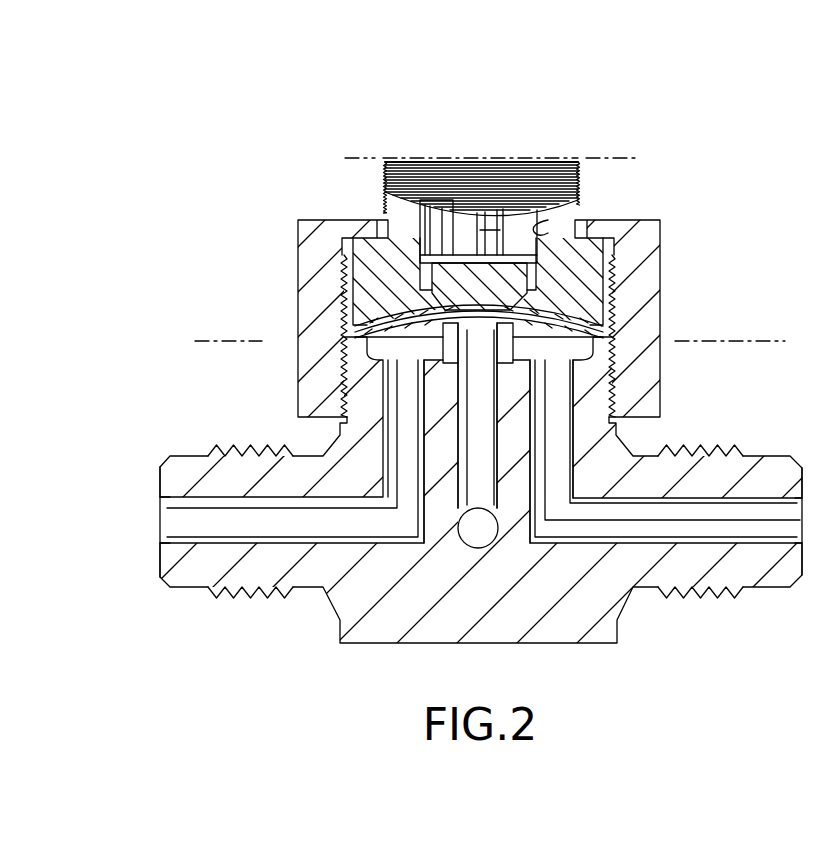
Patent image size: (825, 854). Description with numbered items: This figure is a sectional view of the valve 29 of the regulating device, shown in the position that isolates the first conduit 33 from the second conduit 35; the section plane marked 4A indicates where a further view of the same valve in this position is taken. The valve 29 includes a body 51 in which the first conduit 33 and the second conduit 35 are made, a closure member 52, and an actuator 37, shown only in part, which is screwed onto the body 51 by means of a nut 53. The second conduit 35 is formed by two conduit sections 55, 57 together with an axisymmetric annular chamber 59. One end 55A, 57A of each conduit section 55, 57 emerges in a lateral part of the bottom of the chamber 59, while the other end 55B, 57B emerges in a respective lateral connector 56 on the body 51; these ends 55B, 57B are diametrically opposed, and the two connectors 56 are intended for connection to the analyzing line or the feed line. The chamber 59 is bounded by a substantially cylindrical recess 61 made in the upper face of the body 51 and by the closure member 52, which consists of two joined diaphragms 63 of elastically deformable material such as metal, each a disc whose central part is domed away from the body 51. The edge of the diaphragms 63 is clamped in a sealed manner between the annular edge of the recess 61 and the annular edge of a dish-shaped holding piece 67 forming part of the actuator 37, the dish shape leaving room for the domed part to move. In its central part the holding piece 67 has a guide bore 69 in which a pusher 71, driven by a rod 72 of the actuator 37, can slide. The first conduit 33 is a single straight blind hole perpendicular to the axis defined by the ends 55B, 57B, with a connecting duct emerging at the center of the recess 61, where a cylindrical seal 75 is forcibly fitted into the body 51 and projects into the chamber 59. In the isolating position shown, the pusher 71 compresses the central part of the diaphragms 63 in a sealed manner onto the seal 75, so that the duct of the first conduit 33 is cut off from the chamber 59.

The valve 29 is at (596, 136).
The first conduit 33 is at (482, 532).
The second conduit 35 is at (212, 527).
The actuator 37 is at (520, 158).
The body 51 is at (577, 622).
The closure member 52 is at (540, 309).
The nut 53 is at (320, 238).
The conduit section 55 is at (275, 525).
The end of conduit section 55A is at (408, 377).
The end of conduit section 55B is at (183, 527).
The lateral connector 56 is at (227, 465).
The conduit section 57 is at (632, 525).
The end of conduit section 57A is at (552, 364).
The end of conduit section 57B is at (775, 527).
The annular chamber 59 is at (535, 345).
The cylindrical recess 61 is at (358, 334).
The diaphragm 63 is at (345, 292).
The holding piece 67 is at (352, 233).
The guide bore 69 is at (548, 228).
The pusher 71 is at (460, 283).
The rod 72 is at (572, 186).
The cylindrical seal 75 is at (601, 325).
The section line 4A is at (697, 334).